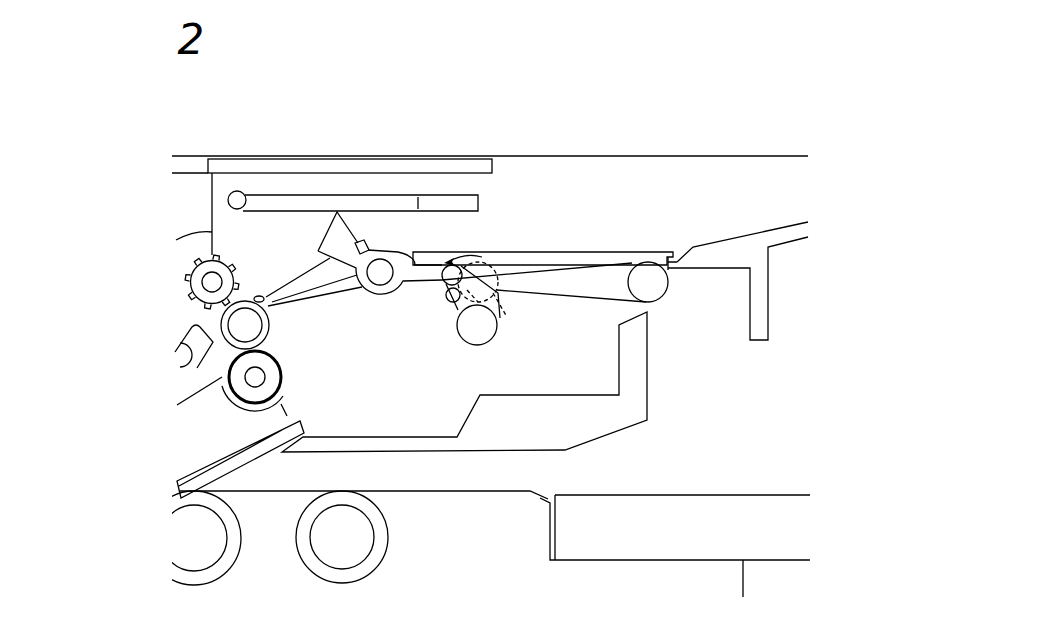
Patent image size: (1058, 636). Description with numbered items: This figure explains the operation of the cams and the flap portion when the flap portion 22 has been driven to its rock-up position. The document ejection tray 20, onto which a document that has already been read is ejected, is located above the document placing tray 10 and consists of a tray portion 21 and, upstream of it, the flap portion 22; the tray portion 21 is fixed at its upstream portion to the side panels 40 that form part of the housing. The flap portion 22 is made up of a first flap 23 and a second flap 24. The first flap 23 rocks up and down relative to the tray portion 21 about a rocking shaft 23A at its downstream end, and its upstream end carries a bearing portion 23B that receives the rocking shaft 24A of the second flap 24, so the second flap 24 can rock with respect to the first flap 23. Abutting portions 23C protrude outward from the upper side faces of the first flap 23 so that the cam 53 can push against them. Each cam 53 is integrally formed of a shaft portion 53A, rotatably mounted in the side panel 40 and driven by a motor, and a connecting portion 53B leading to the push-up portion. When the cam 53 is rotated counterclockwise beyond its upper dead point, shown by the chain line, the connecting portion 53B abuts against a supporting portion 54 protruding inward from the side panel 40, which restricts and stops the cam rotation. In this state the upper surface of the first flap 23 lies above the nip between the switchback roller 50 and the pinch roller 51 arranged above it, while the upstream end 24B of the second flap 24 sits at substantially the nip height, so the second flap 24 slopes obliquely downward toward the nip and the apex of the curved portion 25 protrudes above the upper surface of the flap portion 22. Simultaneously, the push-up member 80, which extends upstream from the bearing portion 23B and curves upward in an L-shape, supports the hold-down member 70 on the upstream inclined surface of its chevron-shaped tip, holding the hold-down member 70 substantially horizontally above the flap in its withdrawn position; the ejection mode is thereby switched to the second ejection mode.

The document placing tray 10 is at (745, 490).
The document ejection tray 20 is at (673, 209).
The tray portion 21 is at (748, 229).
The flap portion 22 is at (380, 226).
The first flap 23 is at (595, 240).
The rocking shaft 23A is at (657, 295).
The bearing portion 23B is at (386, 292).
The abutting portion 23C is at (558, 258).
The second flap 24 is at (312, 307).
The rocking shaft 24A is at (378, 278).
The upstream end 24B is at (257, 294).
The curved portion 25 is at (367, 243).
The side panel 40 is at (728, 154).
The switchback roller 50 is at (222, 325).
The pinch roller 51 is at (188, 263).
The cam 53 is at (507, 318).
The shaft portion 53A is at (488, 342).
The connecting portion 53B is at (487, 272).
The supporting portion 54 is at (449, 301).
The hold-down member 70 is at (267, 196).
The push-up member 80 is at (318, 231).